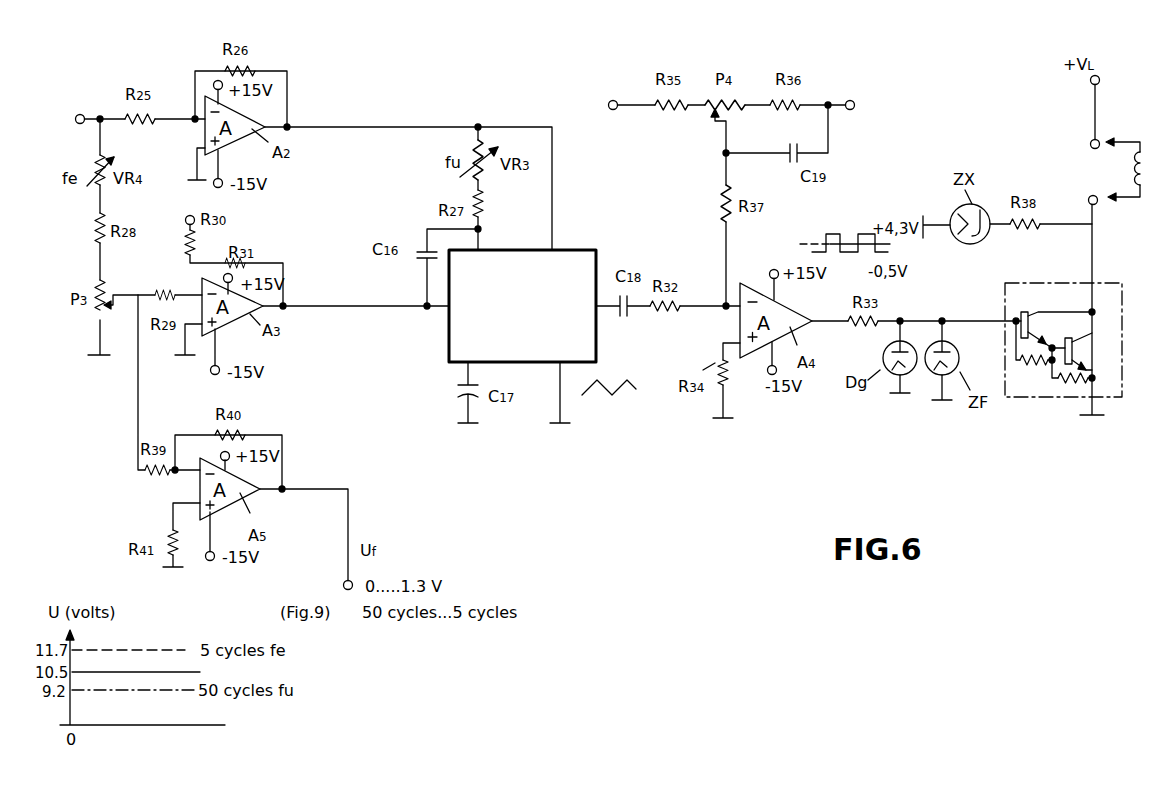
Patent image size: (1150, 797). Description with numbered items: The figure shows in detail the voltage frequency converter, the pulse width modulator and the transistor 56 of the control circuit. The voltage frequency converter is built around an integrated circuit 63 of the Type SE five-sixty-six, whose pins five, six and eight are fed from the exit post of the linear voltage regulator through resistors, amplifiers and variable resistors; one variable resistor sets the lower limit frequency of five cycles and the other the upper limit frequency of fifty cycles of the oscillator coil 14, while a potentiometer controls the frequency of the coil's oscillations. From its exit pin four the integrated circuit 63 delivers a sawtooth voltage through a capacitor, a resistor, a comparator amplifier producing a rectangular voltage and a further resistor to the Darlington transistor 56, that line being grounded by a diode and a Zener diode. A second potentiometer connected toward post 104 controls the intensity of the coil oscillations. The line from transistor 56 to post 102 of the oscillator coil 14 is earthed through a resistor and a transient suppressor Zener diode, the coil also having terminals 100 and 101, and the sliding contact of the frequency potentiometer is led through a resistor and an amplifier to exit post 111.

The supply terminal +VL 100 is at (1100, 80).
The relay contact terminal 101 is at (1089, 145).
The post of oscillator coil 102 is at (1081, 187).
The post 104 is at (853, 111).
The exit post 111 is at (329, 586).
The oscillator coil 14 is at (1133, 168).
The Darlington transistor 56 is at (1030, 291).
The integrated circuit 63 is at (578, 263).